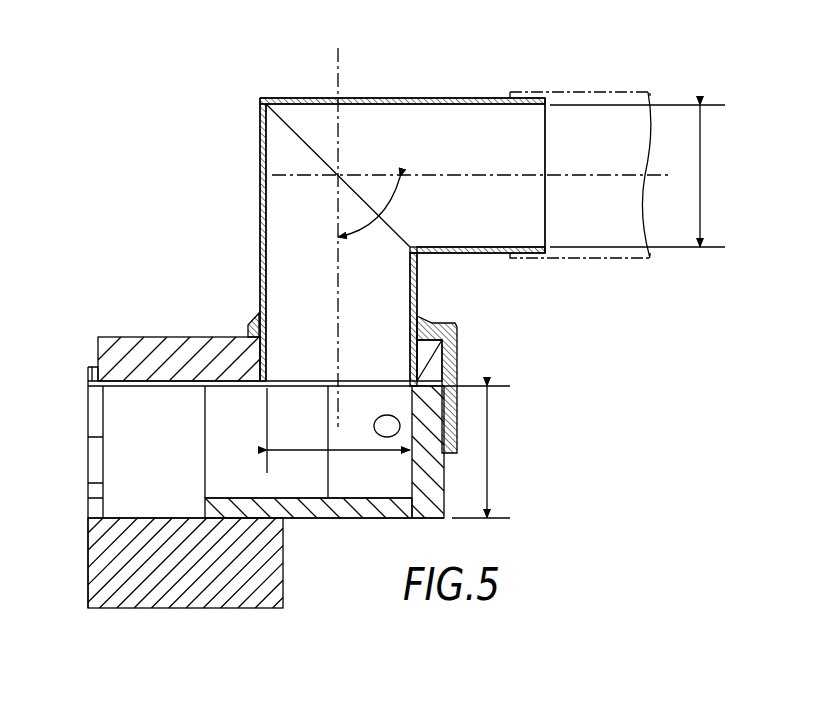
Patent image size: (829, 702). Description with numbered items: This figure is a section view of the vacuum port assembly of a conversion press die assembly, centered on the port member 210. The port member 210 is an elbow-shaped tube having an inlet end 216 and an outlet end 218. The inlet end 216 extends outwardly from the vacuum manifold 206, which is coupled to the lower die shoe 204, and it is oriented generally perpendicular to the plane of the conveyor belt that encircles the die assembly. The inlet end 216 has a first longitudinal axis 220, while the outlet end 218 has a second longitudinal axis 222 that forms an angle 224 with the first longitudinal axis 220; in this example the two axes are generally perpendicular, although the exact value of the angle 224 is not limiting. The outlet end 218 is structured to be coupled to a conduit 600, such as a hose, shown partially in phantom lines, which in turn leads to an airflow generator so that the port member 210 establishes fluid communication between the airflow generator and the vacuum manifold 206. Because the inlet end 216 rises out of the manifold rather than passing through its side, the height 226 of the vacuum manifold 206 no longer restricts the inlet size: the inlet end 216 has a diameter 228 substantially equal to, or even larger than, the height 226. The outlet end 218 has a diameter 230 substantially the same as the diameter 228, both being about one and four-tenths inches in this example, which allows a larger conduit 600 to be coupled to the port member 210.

The lower die shoe 204 is at (92, 558).
The vacuum manifold 206 is at (178, 337).
The port member 210 is at (273, 97).
The inlet end 216 is at (430, 347).
The outlet end 218 is at (505, 92).
The first longitudinal axis 220 is at (338, 72).
The second longitudinal axis 222 is at (572, 164).
The angle 224 is at (382, 214).
The height 226 is at (490, 446).
The diameter of the inlet end 228 is at (335, 452).
The diameter of the outlet end 230 is at (702, 170).
The conduit 600 is at (600, 260).